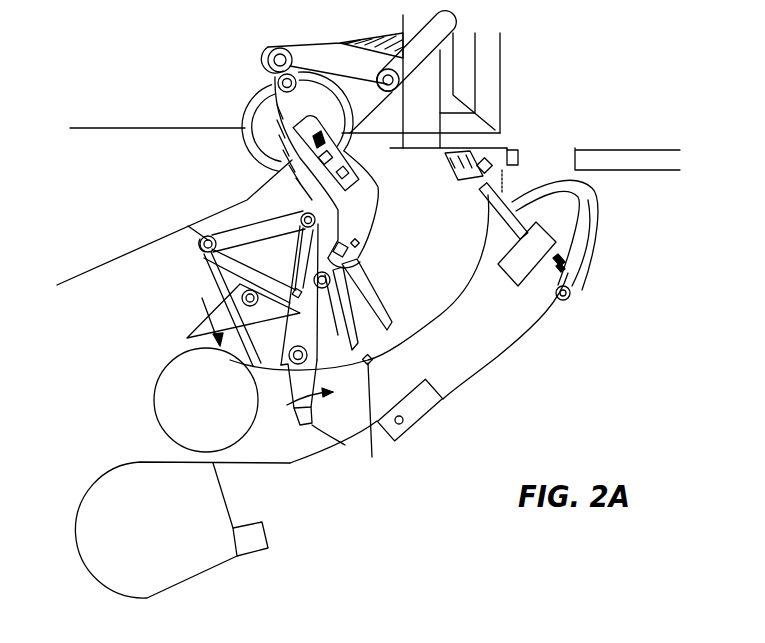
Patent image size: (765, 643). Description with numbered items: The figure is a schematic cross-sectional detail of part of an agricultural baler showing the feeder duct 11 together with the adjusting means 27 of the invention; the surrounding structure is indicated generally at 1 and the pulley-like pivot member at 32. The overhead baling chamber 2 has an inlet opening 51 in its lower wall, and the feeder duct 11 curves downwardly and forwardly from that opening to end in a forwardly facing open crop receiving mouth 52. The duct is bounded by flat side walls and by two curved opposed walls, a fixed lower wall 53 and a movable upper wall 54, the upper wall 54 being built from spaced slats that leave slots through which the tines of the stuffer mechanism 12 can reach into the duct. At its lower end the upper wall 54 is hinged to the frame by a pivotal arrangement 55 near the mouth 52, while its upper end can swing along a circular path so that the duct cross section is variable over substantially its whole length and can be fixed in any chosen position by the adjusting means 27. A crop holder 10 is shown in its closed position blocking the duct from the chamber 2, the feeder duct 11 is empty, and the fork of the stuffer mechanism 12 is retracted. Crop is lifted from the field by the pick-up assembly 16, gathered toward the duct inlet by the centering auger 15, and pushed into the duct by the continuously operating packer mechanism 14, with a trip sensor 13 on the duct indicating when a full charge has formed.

The support post 1 is at (497, 60).
The baling chamber 2 is at (544, 97).
The crop holder 10 is at (593, 237).
The feeder duct 11 is at (513, 323).
The stuffer mechanism 12 is at (378, 288).
The trip sensor 13 is at (443, 400).
The packer mechanism 14 is at (340, 443).
The centering auger 15 is at (227, 435).
The pick-up assembly 16 is at (197, 568).
The adjusting means 27 is at (513, 257).
The pulley 32 is at (247, 105).
The inlet opening 51 is at (540, 147).
The crop receiving mouth 52 is at (277, 435).
The lower wall 53 is at (502, 357).
The upper wall 54 is at (457, 300).
The pivotal arrangement 55 is at (371, 421).